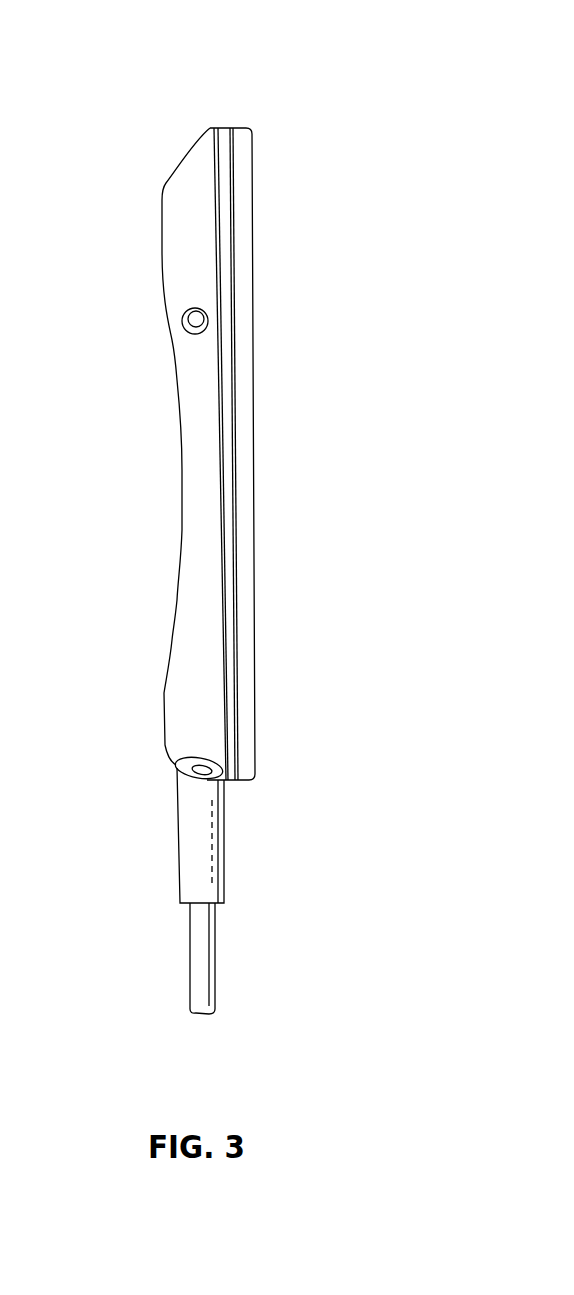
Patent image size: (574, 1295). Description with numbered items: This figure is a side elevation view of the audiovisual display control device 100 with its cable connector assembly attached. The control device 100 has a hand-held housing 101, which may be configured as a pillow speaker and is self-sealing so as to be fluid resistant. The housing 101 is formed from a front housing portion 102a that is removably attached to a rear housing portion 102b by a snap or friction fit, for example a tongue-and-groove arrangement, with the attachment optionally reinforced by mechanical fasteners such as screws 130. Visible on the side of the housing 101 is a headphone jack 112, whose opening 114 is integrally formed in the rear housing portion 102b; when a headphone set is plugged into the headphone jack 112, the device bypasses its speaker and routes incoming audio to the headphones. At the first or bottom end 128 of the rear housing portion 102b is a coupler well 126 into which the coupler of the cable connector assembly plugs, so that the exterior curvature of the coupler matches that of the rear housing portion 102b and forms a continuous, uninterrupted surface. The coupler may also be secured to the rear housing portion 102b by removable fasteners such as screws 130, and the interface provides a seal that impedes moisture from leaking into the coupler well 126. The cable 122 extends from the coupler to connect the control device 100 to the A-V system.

The control device 100 is at (191, 518).
The housing 101 is at (204, 454).
The front housing portion 102a is at (247, 358).
The rear housing portion 102b is at (190, 440).
The headphone jack 112 is at (193, 323).
The opening 114 is at (143, 323).
The cable 122 is at (202, 969).
The coupler well 126 is at (255, 756).
The bottom end 128 is at (148, 772).
The screws 130 is at (207, 775).